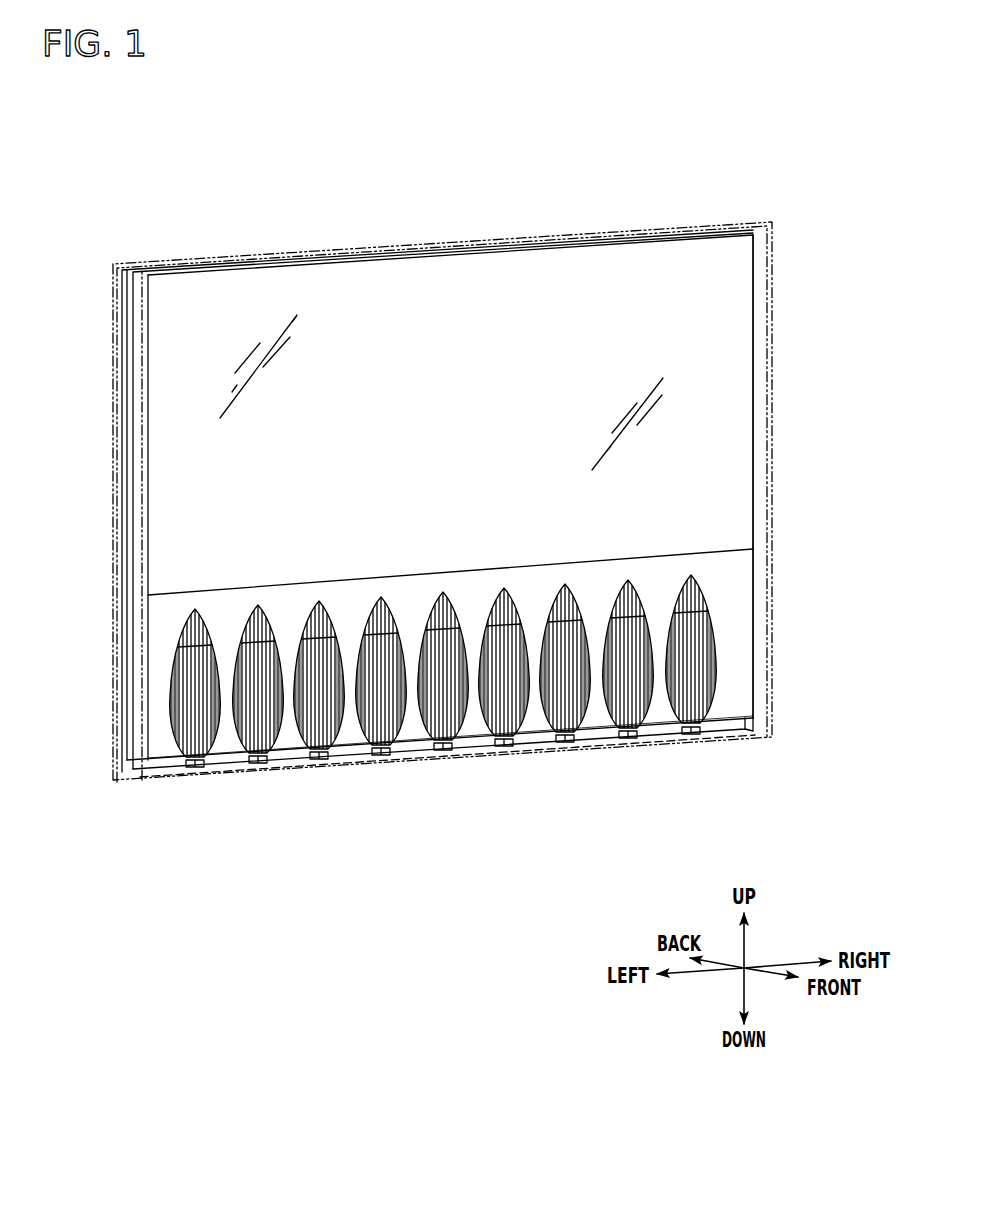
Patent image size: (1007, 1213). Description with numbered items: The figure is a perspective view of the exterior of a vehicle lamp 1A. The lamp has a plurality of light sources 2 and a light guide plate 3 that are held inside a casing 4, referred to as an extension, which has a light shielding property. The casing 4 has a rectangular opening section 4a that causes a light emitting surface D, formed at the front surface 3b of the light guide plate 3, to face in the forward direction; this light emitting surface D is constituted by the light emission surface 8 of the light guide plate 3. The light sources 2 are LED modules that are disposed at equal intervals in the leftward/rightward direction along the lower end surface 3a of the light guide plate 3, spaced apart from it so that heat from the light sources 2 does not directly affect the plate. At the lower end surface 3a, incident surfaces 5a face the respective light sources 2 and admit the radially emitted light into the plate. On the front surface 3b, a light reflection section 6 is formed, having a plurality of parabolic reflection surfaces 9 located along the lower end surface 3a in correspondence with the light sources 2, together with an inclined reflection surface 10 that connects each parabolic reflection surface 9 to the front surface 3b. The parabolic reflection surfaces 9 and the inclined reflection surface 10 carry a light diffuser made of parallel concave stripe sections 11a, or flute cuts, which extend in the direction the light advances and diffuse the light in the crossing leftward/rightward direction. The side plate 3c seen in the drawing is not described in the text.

The vehicle lamp 1A is at (678, 176).
The light emitting surface D is at (452, 303).
The light emission surface 8 is at (450, 464).
The light sources 2 is at (690, 732).
The light guide plate 3 is at (128, 697).
The lower end surface 3a is at (730, 723).
The front surface 3b is at (720, 315).
The side plate 3c is at (125, 456).
The casing 4 is at (113, 538).
The opening section 4a is at (752, 388).
The incident surfaces 5a is at (697, 719).
The light reflection section 6 is at (168, 658).
The parabolic reflection surfaces 9 is at (716, 636).
The inclined reflection surface 10 is at (700, 588).
The concave stripe sections 11a is at (697, 662).